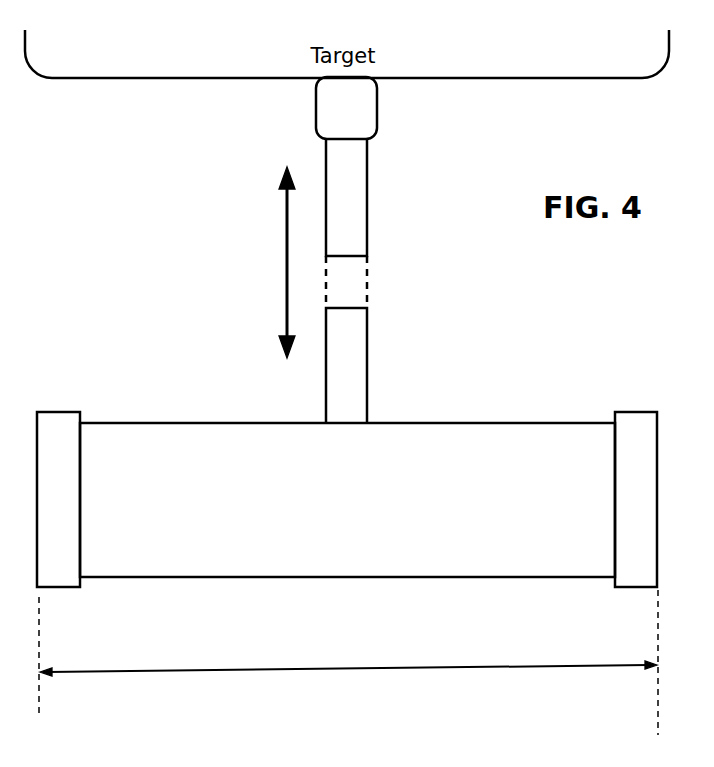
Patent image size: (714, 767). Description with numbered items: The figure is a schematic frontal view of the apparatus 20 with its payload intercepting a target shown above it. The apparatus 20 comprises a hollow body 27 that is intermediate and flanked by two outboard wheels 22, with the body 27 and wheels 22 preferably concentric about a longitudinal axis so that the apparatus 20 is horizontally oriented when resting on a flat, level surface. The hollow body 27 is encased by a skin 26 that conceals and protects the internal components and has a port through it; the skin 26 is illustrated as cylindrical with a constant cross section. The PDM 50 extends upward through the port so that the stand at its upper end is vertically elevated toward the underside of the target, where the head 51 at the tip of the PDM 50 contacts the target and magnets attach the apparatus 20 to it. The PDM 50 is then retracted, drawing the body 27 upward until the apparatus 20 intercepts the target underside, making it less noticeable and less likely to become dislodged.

The apparatus 20 is at (150, 265).
The outboard wheels 22 is at (57, 433).
The skin 26 is at (347, 500).
The hollow body 27 is at (348, 662).
The PDM 50 is at (353, 352).
The contact head 51 is at (352, 118).